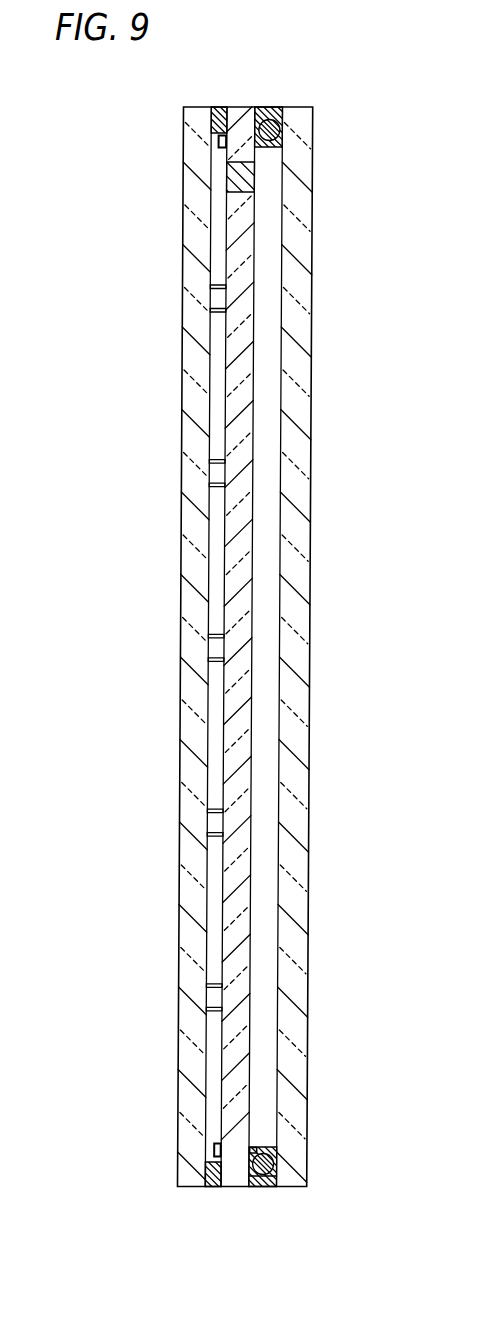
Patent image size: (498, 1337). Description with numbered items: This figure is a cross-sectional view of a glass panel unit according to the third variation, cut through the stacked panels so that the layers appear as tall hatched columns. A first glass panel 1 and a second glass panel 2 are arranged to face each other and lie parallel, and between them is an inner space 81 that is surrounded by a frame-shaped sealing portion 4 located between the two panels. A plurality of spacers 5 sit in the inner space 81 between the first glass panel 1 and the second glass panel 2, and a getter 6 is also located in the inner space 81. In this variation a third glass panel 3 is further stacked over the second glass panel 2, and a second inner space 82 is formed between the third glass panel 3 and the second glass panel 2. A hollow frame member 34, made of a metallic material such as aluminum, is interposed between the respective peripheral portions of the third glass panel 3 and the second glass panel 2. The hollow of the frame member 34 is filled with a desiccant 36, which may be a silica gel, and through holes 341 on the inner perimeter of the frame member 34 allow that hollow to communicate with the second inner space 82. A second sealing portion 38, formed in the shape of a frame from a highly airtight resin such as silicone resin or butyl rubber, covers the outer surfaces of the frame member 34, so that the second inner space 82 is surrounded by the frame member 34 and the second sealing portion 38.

The first glass panel 1 is at (187, 1174).
The second glass panel 2 is at (241, 612).
The third glass panel 3 is at (299, 452).
The sealing portion 4 is at (218, 117).
The spacers 5 is at (215, 819).
The getter 6 is at (220, 1148).
The inner space 81 is at (217, 408).
The second inner space 82 is at (271, 350).
The hollow frame member 34 is at (281, 1155).
The through holes 341 is at (270, 1146).
The desiccant 36 is at (282, 1166).
The second sealing portion 38 is at (269, 1188).